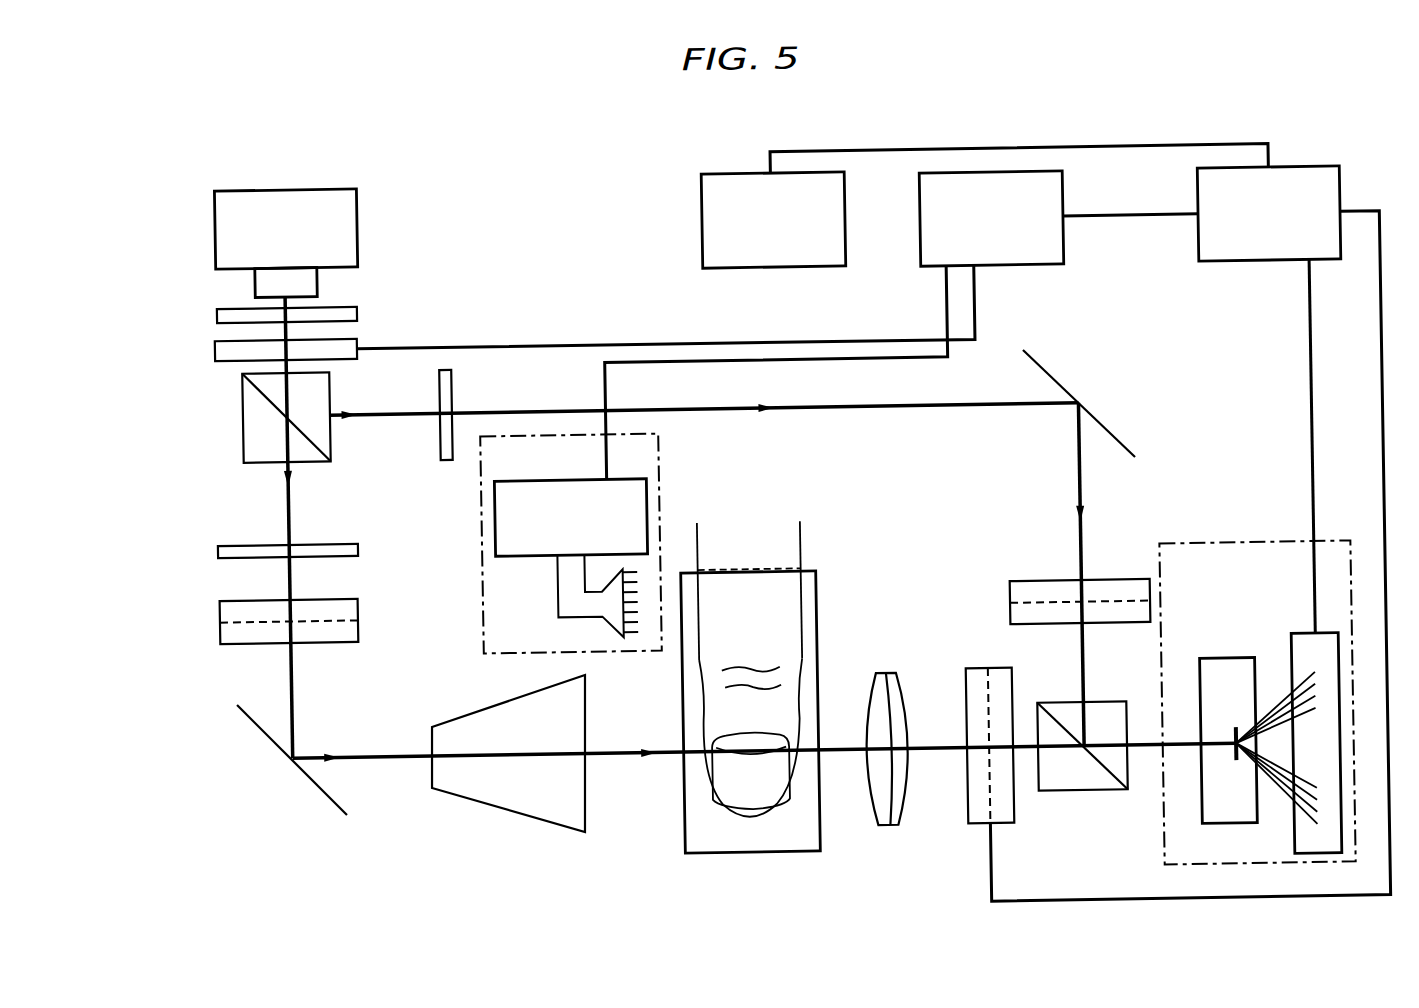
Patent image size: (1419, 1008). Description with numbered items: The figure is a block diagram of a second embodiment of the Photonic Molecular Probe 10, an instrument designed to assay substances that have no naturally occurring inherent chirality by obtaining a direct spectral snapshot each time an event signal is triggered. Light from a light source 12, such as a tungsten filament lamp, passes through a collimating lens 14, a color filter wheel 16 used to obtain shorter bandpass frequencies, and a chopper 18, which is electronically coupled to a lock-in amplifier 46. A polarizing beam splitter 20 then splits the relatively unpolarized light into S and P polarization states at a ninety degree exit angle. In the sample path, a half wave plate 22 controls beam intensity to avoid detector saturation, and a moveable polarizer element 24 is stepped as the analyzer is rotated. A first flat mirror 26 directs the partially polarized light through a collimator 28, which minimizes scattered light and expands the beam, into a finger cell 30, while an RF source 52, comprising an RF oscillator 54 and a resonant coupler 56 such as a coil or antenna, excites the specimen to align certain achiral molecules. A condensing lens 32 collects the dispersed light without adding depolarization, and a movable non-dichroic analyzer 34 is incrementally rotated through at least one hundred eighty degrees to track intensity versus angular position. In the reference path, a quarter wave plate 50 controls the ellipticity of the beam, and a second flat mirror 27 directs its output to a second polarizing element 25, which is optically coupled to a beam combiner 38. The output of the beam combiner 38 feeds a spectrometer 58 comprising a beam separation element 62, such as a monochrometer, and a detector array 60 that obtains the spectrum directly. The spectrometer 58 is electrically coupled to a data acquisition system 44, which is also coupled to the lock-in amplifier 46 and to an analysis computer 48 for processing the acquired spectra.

The Photonic Molecular Probe 10 is at (610, 156).
The light source 12 is at (362, 206).
The collimating lens 14 is at (321, 287).
The color filter wheel 16 is at (220, 306).
The chopper 18 is at (218, 342).
The polarizing beam splitter 20 is at (244, 410).
The half wave plate 22 is at (235, 538).
The polarizer element 24 is at (218, 613).
The second polarizing element 25 is at (1132, 586).
The first flat mirror 26 is at (325, 792).
The second flat mirror 27 is at (1108, 437).
The collimator 28 is at (445, 717).
The finger cell 30 is at (805, 853).
The condensing lens 32 is at (888, 676).
The analyzer 34 is at (990, 673).
The beam combiner 38 is at (1062, 708).
The data acquisition system 44 is at (1322, 176).
The lock-in amplifier 46 is at (925, 205).
The analysis computer 48 is at (707, 215).
The quarter wave plate 50 is at (441, 378).
The RF source 52 is at (660, 468).
The RF oscillator 54 is at (495, 526).
The resonant coupler 56 is at (558, 600).
The spectrometer 58 is at (1221, 551).
The detector array 60 is at (1328, 643).
The beam separation element 62 is at (1222, 667).